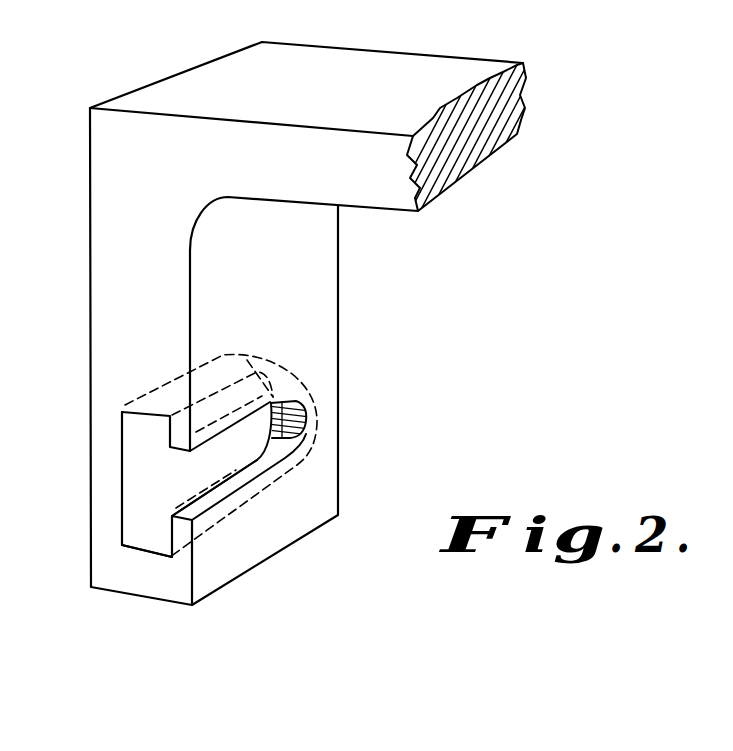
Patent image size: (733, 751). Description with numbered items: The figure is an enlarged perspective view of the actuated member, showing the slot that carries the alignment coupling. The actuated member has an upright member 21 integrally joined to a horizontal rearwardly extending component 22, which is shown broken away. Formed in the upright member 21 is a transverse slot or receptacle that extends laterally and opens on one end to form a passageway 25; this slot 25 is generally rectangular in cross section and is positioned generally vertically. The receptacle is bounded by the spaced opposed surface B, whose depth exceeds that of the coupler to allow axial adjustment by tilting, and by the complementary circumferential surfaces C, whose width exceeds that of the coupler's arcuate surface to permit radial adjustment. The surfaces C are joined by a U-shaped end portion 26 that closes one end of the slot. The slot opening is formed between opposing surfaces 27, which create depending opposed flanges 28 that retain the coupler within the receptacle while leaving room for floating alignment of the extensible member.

The upright member 21 is at (278, 522).
The horizontal rearwardly extending component 22 is at (383, 72).
The passageway 25 is at (137, 494).
The U-shaped end portion 26 is at (311, 429).
The opposing surfaces 27 is at (184, 456).
The depending opposed flanges 28 is at (183, 434).
The opposed surface B is at (137, 463).
The circumferential surface C is at (157, 545).